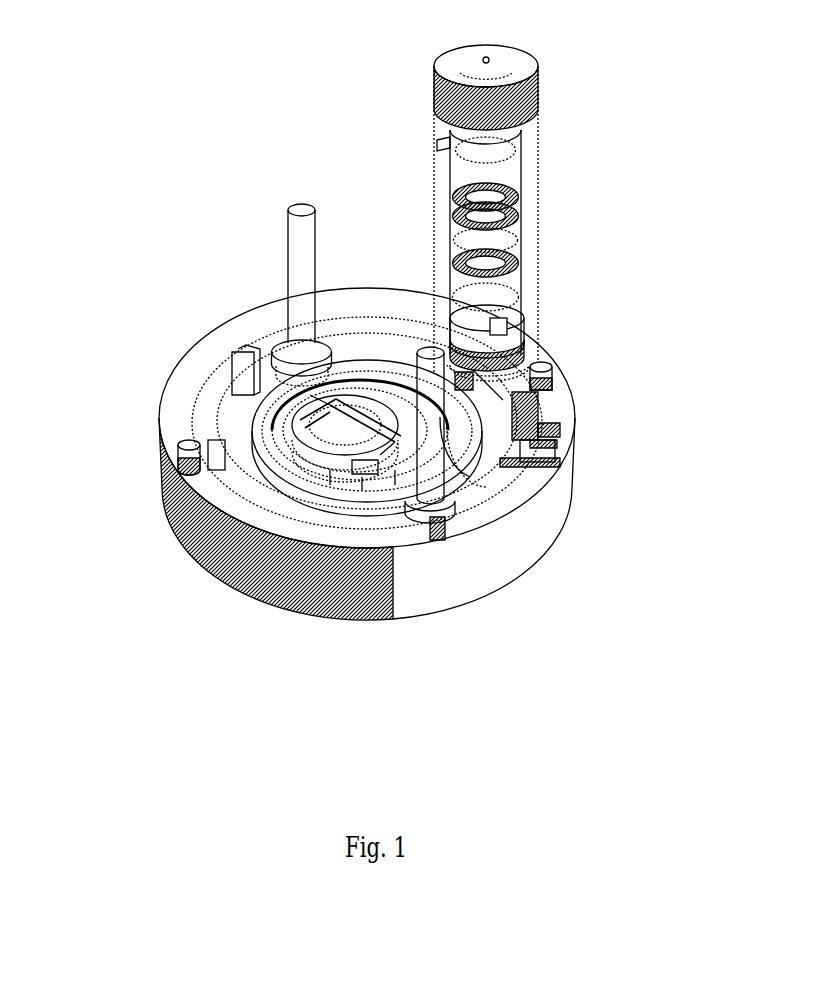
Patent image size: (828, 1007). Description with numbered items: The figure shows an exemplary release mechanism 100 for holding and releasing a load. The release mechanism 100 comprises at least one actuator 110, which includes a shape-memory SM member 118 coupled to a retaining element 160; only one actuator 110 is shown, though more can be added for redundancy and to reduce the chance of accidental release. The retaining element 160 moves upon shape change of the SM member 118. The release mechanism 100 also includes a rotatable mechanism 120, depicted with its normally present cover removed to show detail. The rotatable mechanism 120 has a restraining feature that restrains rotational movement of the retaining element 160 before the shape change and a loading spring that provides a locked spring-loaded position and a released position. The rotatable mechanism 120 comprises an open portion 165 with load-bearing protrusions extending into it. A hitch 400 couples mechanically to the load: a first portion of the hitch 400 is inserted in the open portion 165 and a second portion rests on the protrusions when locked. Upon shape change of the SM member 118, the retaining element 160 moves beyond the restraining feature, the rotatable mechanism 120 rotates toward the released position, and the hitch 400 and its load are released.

The release mechanism 100 is at (162, 197).
The actuator 110 is at (535, 212).
The SM member 118 is at (510, 332).
The rotatable mechanism 120 is at (157, 465).
The retaining element 160 is at (477, 370).
The open portion 165 is at (365, 467).
The hitch 400 is at (350, 415).